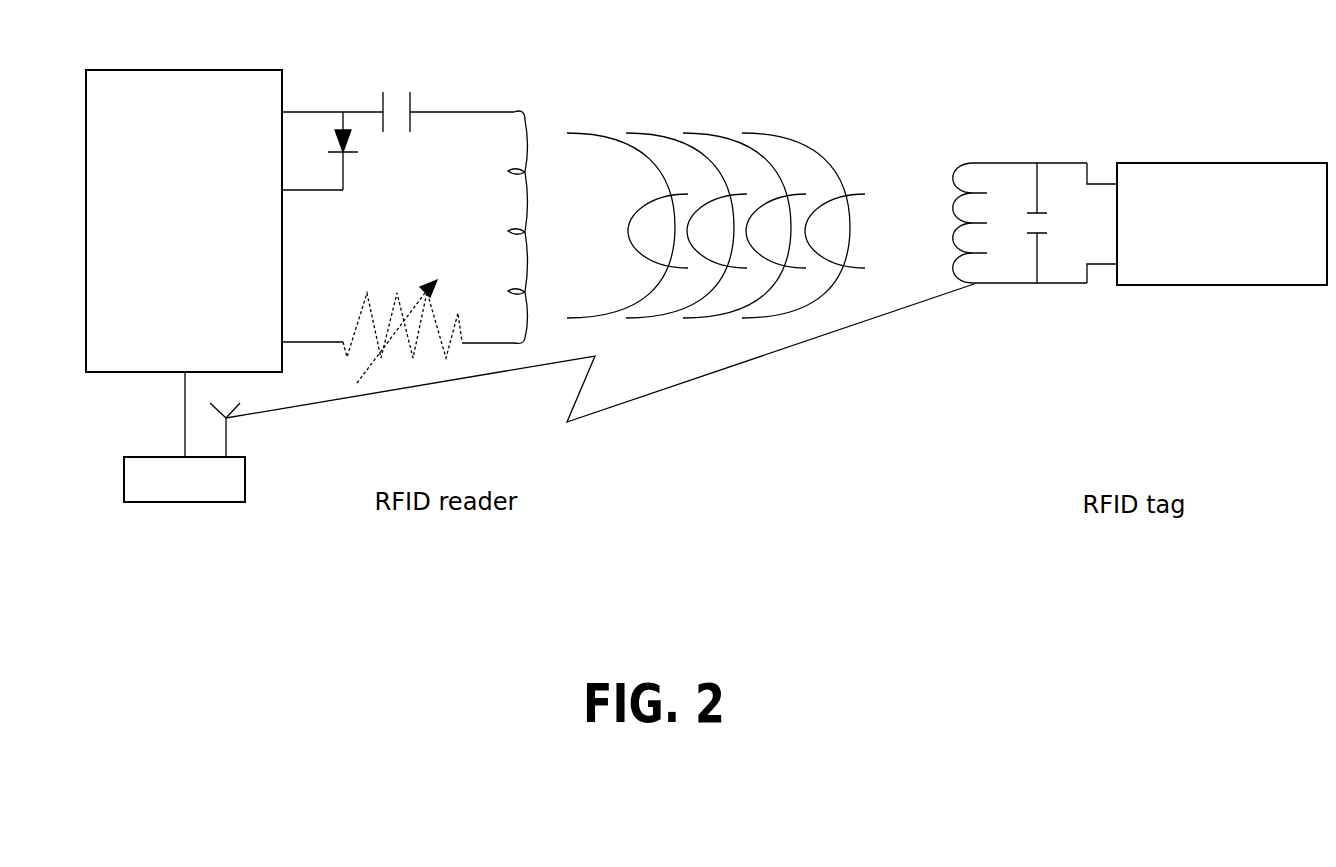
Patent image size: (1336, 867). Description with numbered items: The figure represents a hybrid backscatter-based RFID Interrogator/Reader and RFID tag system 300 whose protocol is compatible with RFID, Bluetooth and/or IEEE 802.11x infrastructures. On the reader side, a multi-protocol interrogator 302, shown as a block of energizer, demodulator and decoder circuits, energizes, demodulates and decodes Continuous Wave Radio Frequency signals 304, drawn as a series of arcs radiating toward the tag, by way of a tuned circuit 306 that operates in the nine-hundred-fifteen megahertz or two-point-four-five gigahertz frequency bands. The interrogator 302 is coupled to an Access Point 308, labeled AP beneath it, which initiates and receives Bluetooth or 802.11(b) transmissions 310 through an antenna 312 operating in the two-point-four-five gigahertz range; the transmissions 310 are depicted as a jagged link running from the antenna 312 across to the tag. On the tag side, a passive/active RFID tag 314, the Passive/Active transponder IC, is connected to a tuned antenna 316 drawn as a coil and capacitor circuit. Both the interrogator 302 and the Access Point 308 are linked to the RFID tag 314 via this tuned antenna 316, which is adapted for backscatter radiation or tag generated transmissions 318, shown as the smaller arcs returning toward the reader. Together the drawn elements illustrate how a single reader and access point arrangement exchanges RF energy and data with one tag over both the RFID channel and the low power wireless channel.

The RFID Interrogator/Reader and RFID tag system 300 is at (798, 92).
The multi-protocol interrogator 302 is at (158, 68).
The Continuous Wave Radio Frequency signals 304 is at (697, 133).
The tuned circuit 306 is at (458, 112).
The Access Point 308 is at (247, 486).
The Bluetooth or 802.11(b) transmissions 310 is at (692, 376).
The antenna 312 is at (227, 448).
The passive/active RFID tag 314 is at (1237, 163).
The tuned antenna 316 is at (1005, 163).
The backscatter radiation or tag generated transmissions 318 is at (843, 196).